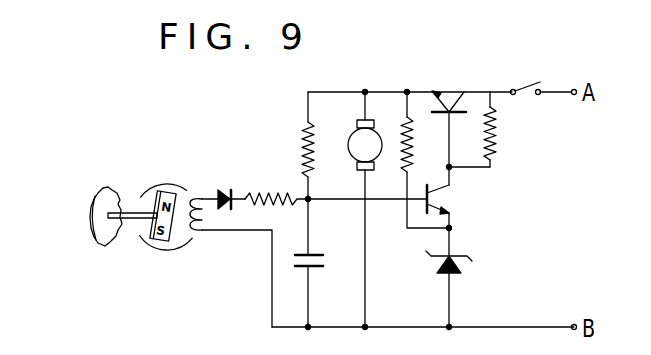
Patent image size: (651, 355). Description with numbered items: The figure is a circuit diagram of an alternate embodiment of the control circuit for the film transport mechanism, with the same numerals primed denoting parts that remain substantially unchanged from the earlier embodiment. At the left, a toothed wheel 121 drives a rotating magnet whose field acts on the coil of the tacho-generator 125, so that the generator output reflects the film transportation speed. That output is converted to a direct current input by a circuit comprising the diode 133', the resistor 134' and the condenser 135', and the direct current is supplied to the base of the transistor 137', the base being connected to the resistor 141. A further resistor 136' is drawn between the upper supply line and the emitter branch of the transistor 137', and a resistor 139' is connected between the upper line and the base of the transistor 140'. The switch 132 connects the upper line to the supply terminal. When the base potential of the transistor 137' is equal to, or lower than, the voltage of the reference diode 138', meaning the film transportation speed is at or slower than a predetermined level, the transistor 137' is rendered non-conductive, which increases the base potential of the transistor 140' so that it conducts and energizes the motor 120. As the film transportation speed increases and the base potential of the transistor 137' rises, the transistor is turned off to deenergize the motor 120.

The gear wheel 121 is at (96, 195).
The tacho-generator 125 is at (197, 233).
The diode 133' is at (219, 177).
The resistor 134' is at (276, 175).
The resistor 141 is at (314, 141).
The condenser 135' is at (326, 263).
The motor 120 is at (382, 133).
The resistor 136' is at (425, 160).
The transistor 140' is at (461, 122).
The resistor 139' is at (509, 129).
The switch 132 is at (544, 73).
The transistor 137' is at (457, 203).
The reference diode 138' is at (468, 277).